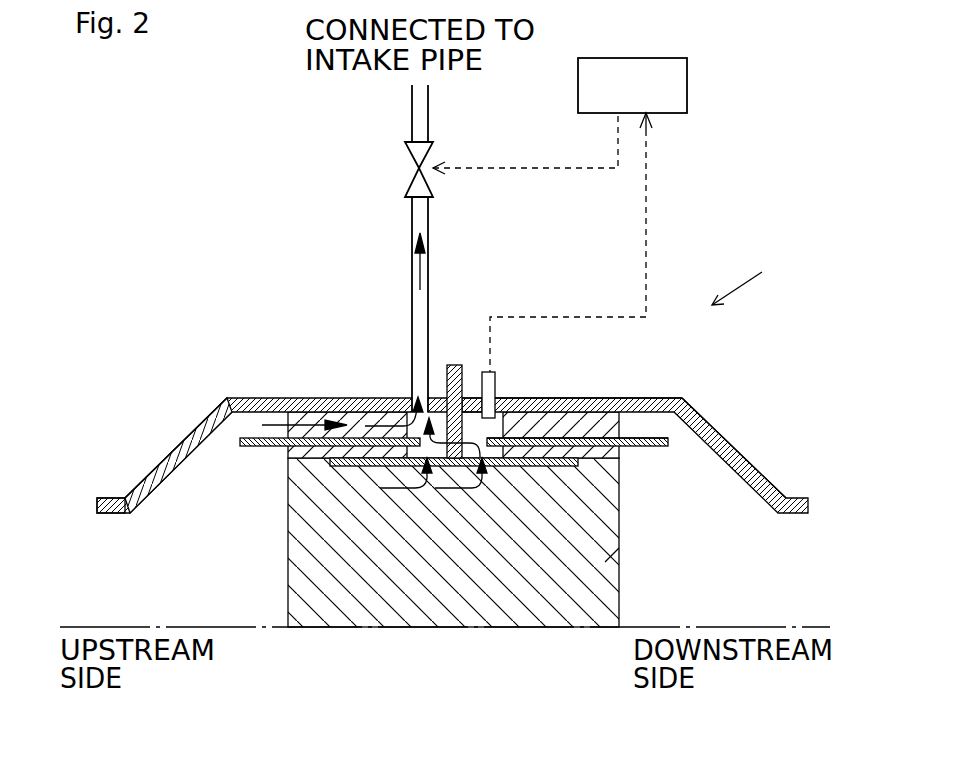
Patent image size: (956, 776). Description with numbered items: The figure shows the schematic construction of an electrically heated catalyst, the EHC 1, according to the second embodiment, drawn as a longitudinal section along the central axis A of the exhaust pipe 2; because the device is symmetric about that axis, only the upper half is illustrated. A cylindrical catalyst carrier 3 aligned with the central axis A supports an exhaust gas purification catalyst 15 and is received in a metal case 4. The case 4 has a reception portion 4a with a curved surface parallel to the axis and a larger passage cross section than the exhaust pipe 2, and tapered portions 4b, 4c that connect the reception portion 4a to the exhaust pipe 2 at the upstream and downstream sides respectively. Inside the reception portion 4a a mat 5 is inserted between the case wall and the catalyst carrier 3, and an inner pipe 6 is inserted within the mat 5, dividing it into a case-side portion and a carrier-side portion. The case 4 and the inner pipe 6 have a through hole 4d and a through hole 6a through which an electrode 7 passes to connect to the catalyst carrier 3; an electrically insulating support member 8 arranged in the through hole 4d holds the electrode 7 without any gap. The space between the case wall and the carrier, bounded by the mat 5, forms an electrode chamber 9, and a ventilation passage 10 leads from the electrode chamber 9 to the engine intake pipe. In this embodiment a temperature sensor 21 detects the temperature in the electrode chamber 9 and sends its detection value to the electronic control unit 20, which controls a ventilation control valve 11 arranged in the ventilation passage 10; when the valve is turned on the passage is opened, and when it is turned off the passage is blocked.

The EHC 1 is at (783, 282).
The exhaust pipe 2 is at (103, 498).
The catalyst carrier 3 is at (287, 560).
The case 4 is at (315, 398).
The reception portion 4a is at (602, 398).
The tapered portion 4b is at (180, 443).
The tapered portion 4c is at (733, 443).
The through hole 4d is at (477, 396).
The mat 5 is at (607, 425).
The inner pipe 6 is at (277, 447).
The through hole 6a is at (520, 433).
The electrode 7 is at (450, 365).
The support member 8 is at (468, 396).
The electrode chamber 9 is at (392, 425).
The ventilation passage 10 is at (412, 298).
The ventilation control valve 11 is at (433, 152).
The exhaust gas purification catalyst 15 is at (605, 562).
The electronic control unit 20 is at (633, 58).
The temperature sensor 21 is at (497, 383).
The central axis A is at (710, 627).